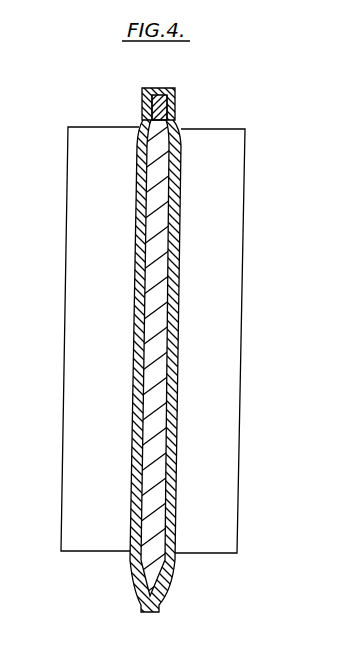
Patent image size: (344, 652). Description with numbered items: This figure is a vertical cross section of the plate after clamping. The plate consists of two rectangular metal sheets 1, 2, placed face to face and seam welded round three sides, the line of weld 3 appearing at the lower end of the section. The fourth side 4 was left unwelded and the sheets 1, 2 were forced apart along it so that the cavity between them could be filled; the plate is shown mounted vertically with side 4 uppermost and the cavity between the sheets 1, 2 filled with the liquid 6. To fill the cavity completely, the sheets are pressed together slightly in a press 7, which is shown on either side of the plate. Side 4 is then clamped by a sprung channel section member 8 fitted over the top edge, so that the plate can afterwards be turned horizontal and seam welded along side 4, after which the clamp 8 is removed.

The metal sheet 1 is at (175, 177).
The metal sheet 2 is at (143, 178).
The line of weld 3 is at (158, 601).
The fourth side 4 is at (173, 97).
The liquid 6 is at (155, 308).
The press 7 is at (82, 366).
The sprung channel section member 8 is at (157, 89).